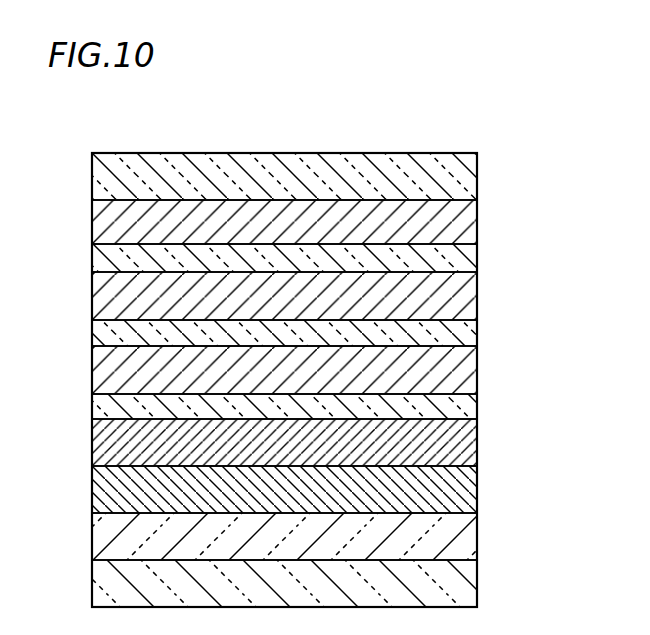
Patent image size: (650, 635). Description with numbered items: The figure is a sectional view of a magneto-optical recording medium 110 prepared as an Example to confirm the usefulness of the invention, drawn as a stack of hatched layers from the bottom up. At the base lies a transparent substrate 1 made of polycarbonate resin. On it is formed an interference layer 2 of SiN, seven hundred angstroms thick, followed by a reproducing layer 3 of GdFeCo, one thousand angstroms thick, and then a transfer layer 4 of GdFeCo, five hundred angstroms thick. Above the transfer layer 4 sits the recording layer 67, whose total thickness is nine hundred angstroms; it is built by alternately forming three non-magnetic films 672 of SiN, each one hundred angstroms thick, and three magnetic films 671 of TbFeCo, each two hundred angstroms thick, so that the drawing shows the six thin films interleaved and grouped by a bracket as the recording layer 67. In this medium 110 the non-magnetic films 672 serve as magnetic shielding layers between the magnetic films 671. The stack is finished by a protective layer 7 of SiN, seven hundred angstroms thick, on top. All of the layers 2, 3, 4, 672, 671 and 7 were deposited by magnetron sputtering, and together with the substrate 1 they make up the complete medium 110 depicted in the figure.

The magneto-optical recording medium 110 is at (467, 132).
The protective layer 7 is at (468, 170).
The recording layer 67 is at (339, 309).
The magnetic film 671 is at (468, 223).
The non-magnetic film 672 is at (468, 261).
The transfer layer 4 is at (468, 443).
The reproducing layer 3 is at (468, 490).
The interference layer 2 is at (468, 537).
The transparent substrate 1 is at (468, 584).